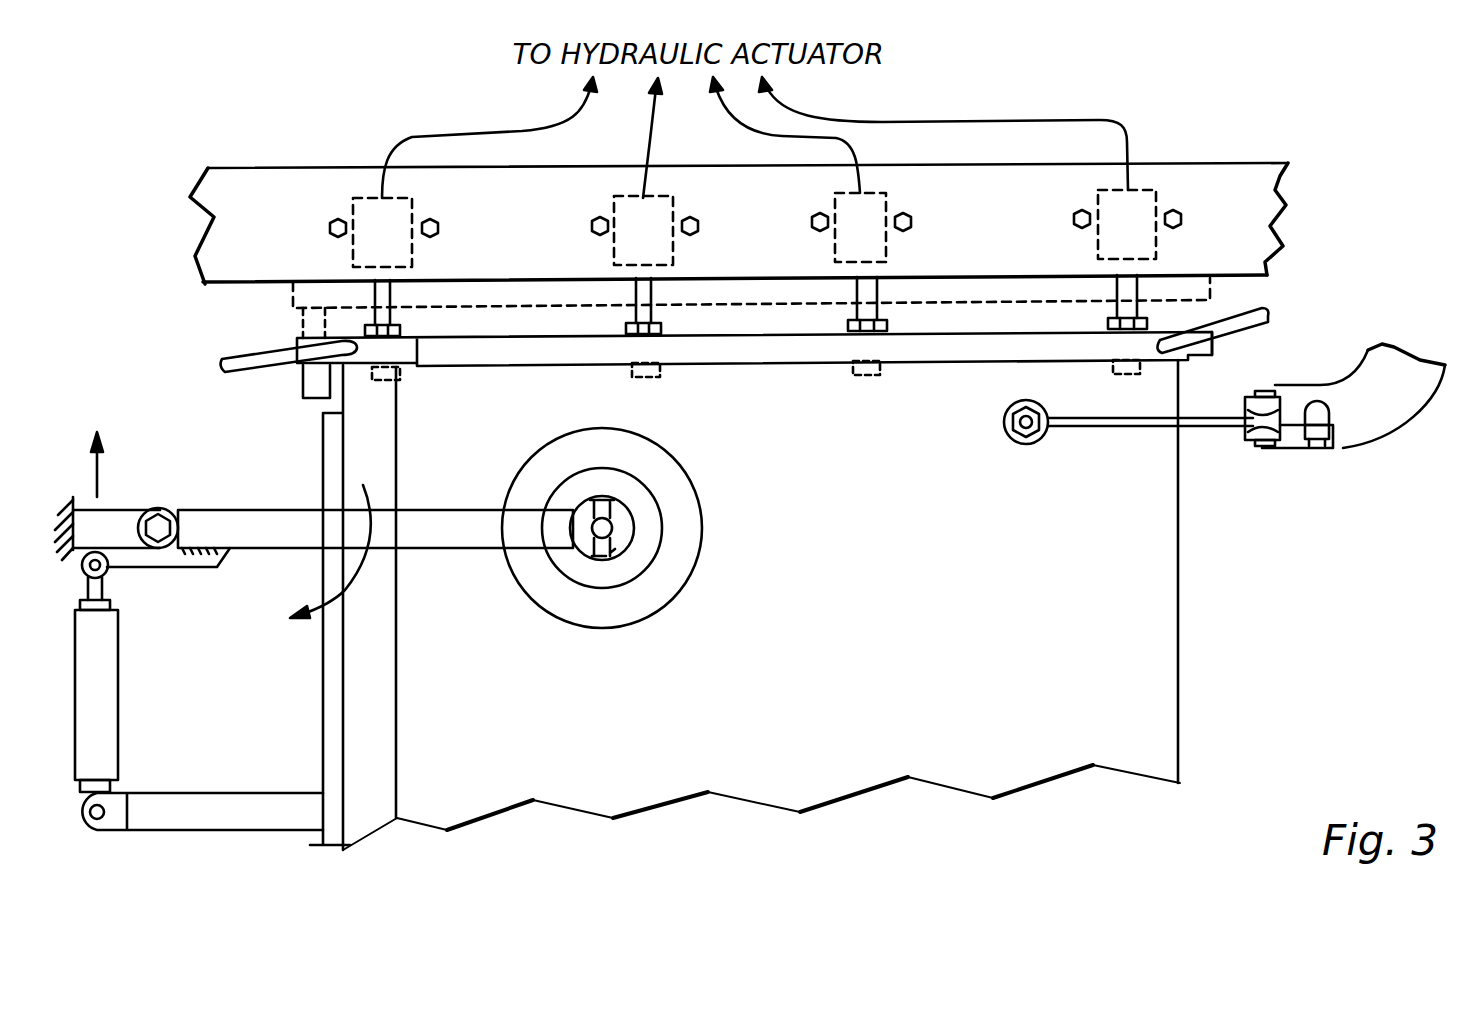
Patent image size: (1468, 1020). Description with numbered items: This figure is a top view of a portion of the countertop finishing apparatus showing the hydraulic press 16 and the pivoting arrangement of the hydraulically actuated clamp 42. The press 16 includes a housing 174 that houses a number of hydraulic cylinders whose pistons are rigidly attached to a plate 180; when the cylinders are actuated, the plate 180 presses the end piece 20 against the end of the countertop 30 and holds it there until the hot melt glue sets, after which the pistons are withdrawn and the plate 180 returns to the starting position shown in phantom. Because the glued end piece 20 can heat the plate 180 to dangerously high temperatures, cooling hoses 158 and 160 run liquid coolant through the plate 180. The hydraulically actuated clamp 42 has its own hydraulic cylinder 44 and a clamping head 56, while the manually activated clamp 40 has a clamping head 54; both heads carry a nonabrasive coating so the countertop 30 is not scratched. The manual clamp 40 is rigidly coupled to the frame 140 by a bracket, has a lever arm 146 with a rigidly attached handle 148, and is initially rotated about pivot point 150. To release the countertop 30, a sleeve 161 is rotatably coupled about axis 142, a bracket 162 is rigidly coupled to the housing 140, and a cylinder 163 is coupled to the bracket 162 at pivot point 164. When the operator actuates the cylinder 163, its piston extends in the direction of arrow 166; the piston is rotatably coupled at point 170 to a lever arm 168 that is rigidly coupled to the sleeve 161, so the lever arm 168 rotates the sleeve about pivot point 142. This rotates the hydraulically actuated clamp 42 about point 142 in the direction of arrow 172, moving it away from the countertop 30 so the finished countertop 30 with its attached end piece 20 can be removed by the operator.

The press 16 is at (1208, 155).
The end piece 20 is at (697, 364).
The countertop piece 30 is at (978, 657).
The manually activated clamp 40 is at (1088, 428).
The hydraulically actuated clamp 42 is at (447, 550).
The hydraulic cylinder 44 is at (620, 562).
The clamping head 54 is at (1014, 440).
The clamping head 56 is at (680, 570).
The frame 140 is at (335, 775).
The pivot point 142 is at (158, 512).
The lever arm 146 is at (1157, 420).
The handle 148 is at (1262, 412).
The pivot point 150 is at (1318, 447).
The cooling hose 158 is at (240, 360).
The cooling hose 160 is at (1248, 306).
The sleeve 161 is at (182, 512).
The bracket 162 is at (180, 812).
The cylinder 163 is at (100, 635).
The pivot point 164 is at (95, 830).
The arrow 166 is at (105, 462).
The lever arm 168 is at (150, 560).
The point 170 is at (108, 573).
The arrow 172 is at (322, 600).
The housing 174 is at (212, 182).
The plate 180 is at (1215, 343).